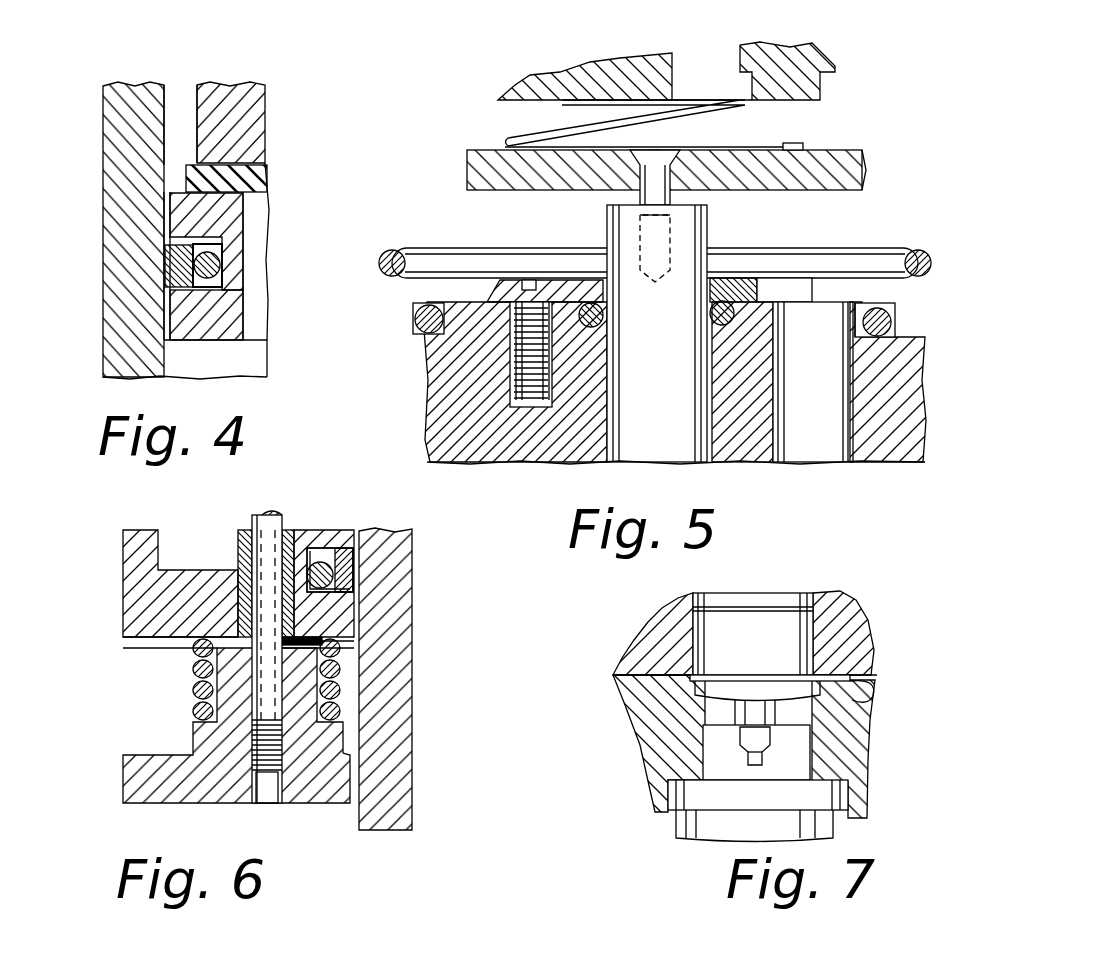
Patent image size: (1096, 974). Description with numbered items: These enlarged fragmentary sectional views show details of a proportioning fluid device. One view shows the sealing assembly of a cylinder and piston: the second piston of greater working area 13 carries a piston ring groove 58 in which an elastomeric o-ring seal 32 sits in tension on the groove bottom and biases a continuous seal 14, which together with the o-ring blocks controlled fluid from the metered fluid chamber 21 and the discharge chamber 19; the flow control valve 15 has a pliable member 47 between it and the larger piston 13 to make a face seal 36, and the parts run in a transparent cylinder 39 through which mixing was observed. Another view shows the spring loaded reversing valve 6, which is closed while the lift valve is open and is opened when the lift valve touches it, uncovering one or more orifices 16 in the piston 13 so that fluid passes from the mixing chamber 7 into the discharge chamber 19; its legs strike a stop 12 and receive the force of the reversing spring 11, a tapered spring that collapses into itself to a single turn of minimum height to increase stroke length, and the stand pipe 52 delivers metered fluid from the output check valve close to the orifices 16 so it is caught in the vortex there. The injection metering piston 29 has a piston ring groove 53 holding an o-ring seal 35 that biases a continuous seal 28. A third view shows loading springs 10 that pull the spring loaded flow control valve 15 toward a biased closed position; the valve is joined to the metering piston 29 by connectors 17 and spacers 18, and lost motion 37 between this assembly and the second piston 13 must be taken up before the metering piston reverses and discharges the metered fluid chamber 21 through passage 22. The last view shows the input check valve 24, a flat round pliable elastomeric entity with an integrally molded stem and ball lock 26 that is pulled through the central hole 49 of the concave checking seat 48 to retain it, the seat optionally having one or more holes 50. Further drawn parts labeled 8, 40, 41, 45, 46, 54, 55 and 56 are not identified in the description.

In FIG. 5, the spring loaded reversing valve 6 is at (566, 80).
In FIG. 4, the mixing chamber 7 is at (201, 372).
In FIG. 5, the mixing chamber 7 is at (432, 233).
In FIG. 6, the mixing chamber 7 is at (145, 714).
In FIG. 5, the leaf spring 8 is at (700, 111).
In FIG. 6, the loading springs 10 is at (357, 643).
In FIG. 5, the reversing spring 11 is at (905, 256).
In FIG. 5, the stop 12 is at (448, 306).
In FIG. 4, the second piston of greater working area 13 is at (235, 215).
In FIG. 6, the second piston of greater working area 13 is at (352, 600).
In FIG. 4, the continuous seal 14 is at (172, 262).
In FIG. 6, the continuous seal 14 is at (352, 567).
In FIG. 4, the spring loaded flow control valve 15 is at (245, 110).
In FIG. 4, the orifices 16 is at (256, 286).
In FIG. 6, the connectors 17 is at (283, 517).
In FIG. 6, the spacers 18 is at (246, 541).
In FIG. 4, the discharge chamber 19 is at (180, 96).
In FIG. 5, the metered fluid chamber 21 is at (605, 440).
In FIG. 7, the metered fluid chamber 21 is at (730, 640).
In FIG. 7, the passage 22 is at (866, 694).
In FIG. 7, the input check valve 24 is at (770, 657).
In FIG. 7, the integral elastomeric stem and ball lock 26 is at (758, 811).
In FIG. 5, the continuous seal 28 is at (597, 320).
In FIG. 5, the injection metering piston 29 is at (636, 398).
In FIG. 7, the injection metering piston 29 is at (780, 603).
In FIG. 4, the o-ring seal 32 is at (225, 262).
In FIG. 6, the o-ring seal 32 is at (327, 566).
In FIG. 5, the o-ring seal 35 is at (657, 293).
In FIG. 4, the face seal 36 is at (183, 190).
In FIG. 6, the lost motion 37 is at (196, 651).
In FIG. 4, the transparent cylinder 39 is at (110, 98).
In FIG. 6, the transparent cylinder 39 is at (400, 712).
In FIG. 5, the block 40 is at (742, 445).
In FIG. 7, the housing 41 is at (665, 759).
In FIG. 5, the plate 45 is at (858, 178).
In FIG. 6, the plate 45 is at (197, 766).
In FIG. 5, the pin 46 is at (680, 190).
In FIG. 4, the pliable member 47 is at (262, 181).
In FIG. 7, the concave checking seat 48 is at (805, 705).
In FIG. 7, the central hole 49 is at (766, 736).
In FIG. 7, the holes 50 is at (731, 757).
In FIG. 5, the stand pipe 52 is at (796, 388).
In FIG. 5, the piston ring groove 53 is at (710, 313).
In FIG. 5, the bracket 54 is at (745, 292).
In FIG. 5, the bracket 55 is at (548, 290).
In FIG. 5, the slot 56 is at (688, 86).
In FIG. 4, the piston ring groove 58 is at (232, 303).
In FIG. 6, the piston ring groove 58 is at (336, 556).